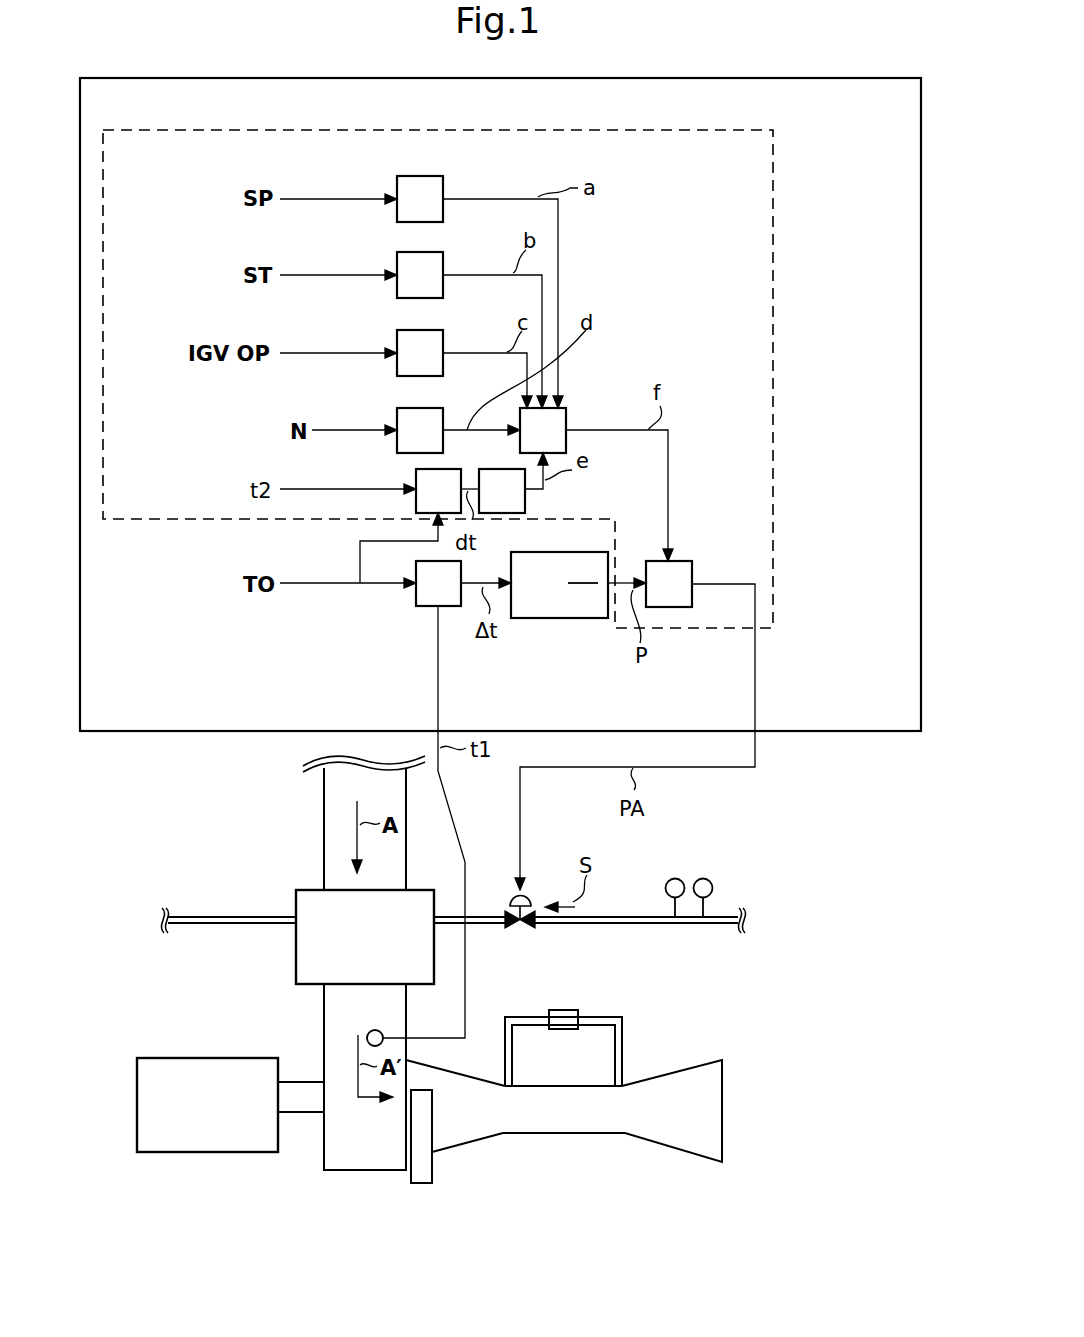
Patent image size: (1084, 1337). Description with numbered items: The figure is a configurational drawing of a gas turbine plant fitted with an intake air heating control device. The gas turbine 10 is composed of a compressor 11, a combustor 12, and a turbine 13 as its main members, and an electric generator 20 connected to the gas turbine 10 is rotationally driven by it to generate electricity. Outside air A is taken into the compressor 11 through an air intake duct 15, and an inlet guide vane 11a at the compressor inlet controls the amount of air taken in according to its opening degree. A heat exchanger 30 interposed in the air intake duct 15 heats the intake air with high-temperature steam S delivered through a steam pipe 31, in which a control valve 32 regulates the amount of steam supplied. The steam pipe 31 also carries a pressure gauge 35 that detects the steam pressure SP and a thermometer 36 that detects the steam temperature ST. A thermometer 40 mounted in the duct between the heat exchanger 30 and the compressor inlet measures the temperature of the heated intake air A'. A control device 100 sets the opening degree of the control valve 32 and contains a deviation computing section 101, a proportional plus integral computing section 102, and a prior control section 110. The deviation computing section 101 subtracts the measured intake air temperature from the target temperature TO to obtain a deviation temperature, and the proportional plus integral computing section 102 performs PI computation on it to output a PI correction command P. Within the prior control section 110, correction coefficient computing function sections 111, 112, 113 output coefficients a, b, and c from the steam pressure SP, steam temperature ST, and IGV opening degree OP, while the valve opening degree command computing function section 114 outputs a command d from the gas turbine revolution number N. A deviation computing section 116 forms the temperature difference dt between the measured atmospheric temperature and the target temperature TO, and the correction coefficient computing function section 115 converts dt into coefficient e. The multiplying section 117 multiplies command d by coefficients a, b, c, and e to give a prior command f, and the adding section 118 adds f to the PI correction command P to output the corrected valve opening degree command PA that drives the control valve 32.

The gas turbine 10 is at (558, 1116).
The compressor 11 is at (450, 1156).
The inlet guide vane (IGV) 11a is at (417, 1186).
The combustor 12 is at (572, 1008).
The turbine 13 is at (660, 1127).
The air intake duct 15 is at (332, 1007).
The electric generator 20 is at (203, 1143).
The heat exchanger 30 is at (295, 940).
The steam pipe 31 is at (487, 930).
The control valve 32 is at (533, 897).
The pressure gauge 35 is at (675, 878).
The thermometer 36 is at (713, 887).
The thermometer 40 is at (366, 1033).
The control device 100 is at (874, 732).
The deviation computing section 101 is at (413, 603).
The proportional plus integral computing section 102 is at (580, 619).
The prior control section 110 is at (773, 402).
The correction coefficient computing function section 111 is at (432, 176).
The correction coefficient computing function section 112 is at (434, 252).
The correction coefficient computing function section 113 is at (397, 332).
The valve opening degree command computing function section 114 is at (397, 410).
The correction coefficient computing function section 115 is at (527, 500).
The deviation computing section 116 is at (416, 471).
The multiplying section 117 is at (566, 416).
The adding section 118 is at (693, 573).